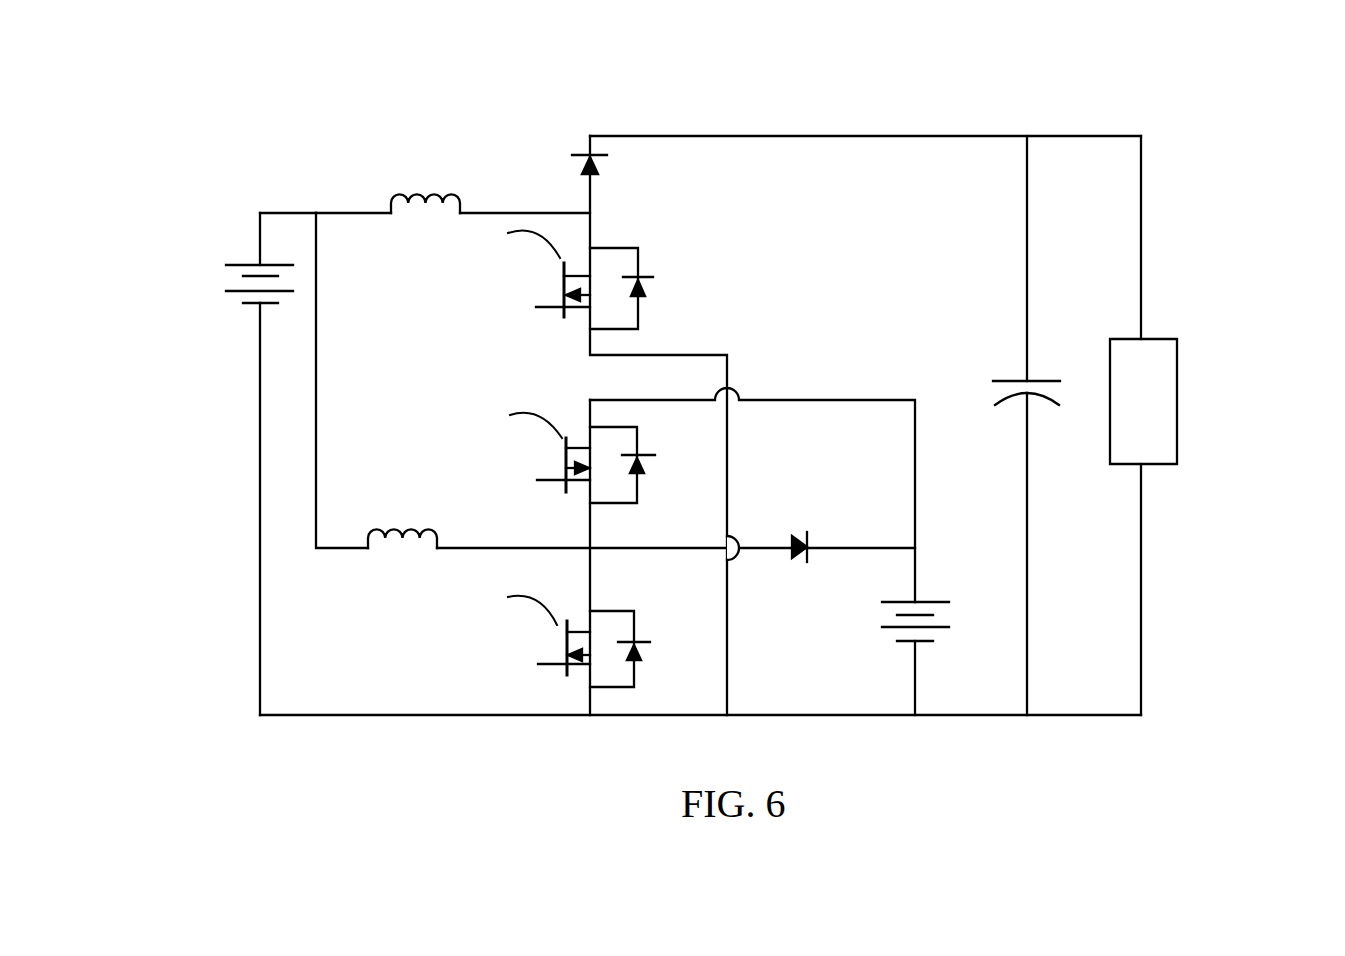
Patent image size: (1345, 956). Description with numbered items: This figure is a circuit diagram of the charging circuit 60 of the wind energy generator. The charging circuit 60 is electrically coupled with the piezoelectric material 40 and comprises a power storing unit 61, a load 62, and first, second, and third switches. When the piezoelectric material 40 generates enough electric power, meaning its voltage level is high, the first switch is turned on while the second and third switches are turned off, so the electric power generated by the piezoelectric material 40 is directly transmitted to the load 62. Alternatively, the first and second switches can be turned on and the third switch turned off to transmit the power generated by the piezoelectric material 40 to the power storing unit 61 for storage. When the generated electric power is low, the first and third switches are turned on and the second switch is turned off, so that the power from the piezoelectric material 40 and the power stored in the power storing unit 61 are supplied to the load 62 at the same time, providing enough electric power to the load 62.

The piezoelectric material 40 is at (218, 273).
The charging circuit 60 is at (1180, 93).
The power storing unit 61 is at (956, 608).
The load 62 is at (1157, 338).